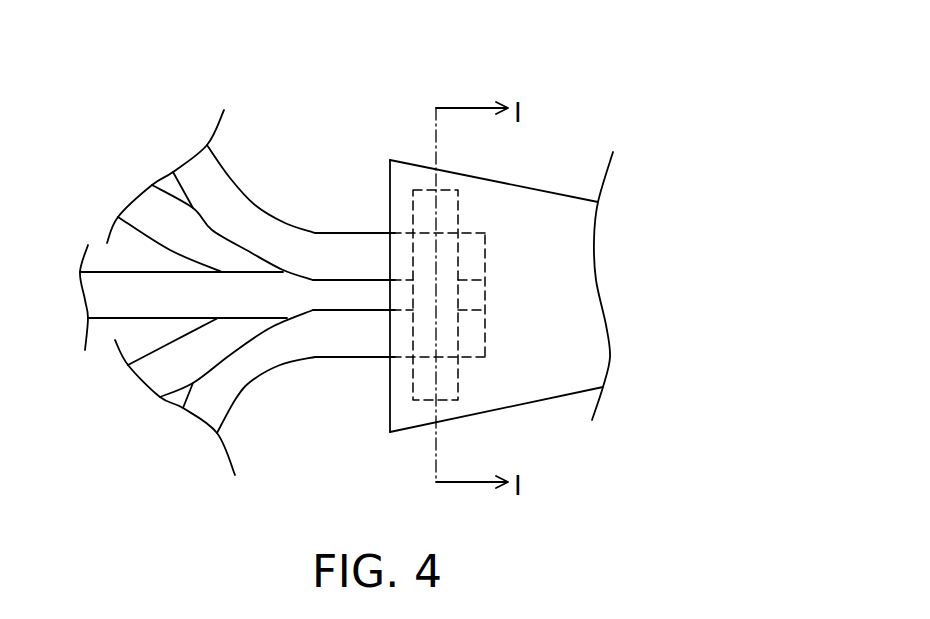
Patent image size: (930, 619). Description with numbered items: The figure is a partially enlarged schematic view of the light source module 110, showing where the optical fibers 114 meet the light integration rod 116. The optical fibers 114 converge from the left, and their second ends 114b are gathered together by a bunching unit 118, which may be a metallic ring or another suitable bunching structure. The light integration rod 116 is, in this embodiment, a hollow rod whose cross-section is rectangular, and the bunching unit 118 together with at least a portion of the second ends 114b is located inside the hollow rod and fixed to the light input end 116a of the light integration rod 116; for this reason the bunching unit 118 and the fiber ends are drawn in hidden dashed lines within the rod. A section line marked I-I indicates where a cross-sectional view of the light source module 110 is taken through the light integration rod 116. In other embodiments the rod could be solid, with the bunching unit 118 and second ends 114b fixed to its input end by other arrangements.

The light source module 110 is at (176, 459).
The optical fibers 114 is at (307, 247).
The second ends of the optical fibers 114b is at (349, 389).
The light integration rod 116 is at (552, 220).
The light input end of the light integration rod 116a is at (391, 147).
The bunching unit 118 is at (458, 375).